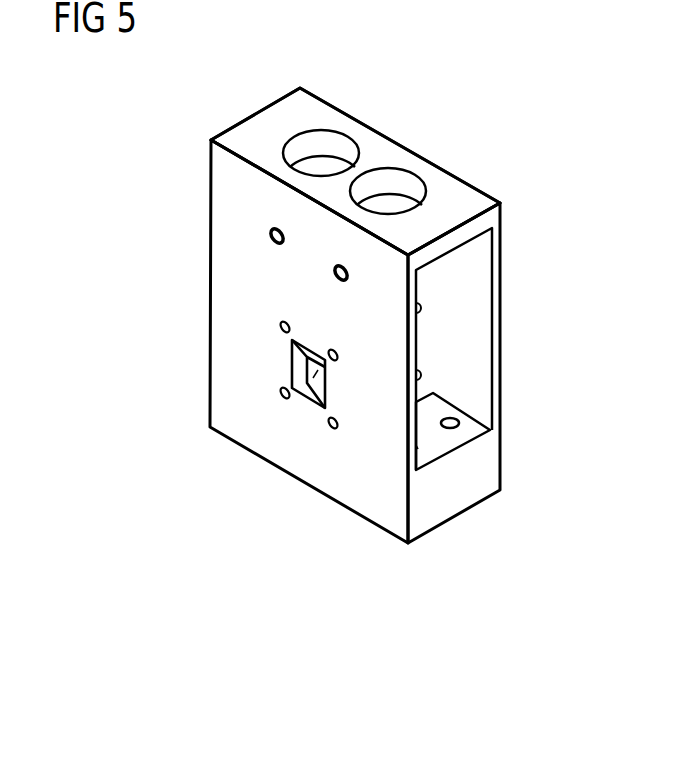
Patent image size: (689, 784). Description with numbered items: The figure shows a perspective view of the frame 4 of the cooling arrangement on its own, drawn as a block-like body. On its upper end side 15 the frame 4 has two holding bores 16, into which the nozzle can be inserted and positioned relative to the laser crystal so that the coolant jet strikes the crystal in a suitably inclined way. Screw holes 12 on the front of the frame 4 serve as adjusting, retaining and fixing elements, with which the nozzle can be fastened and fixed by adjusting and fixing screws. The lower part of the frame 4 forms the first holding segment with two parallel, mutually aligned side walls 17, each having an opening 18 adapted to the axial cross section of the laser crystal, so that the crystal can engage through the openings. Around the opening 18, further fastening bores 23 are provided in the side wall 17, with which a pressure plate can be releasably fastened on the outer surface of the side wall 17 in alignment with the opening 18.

The frame 4 is at (482, 118).
The upper end side 15 is at (270, 122).
The holding bores 16 is at (322, 155).
The screw holes 12 is at (334, 278).
The further fastening bores 23 is at (280, 331).
The opening 18 is at (311, 377).
The side walls 17 is at (413, 345).